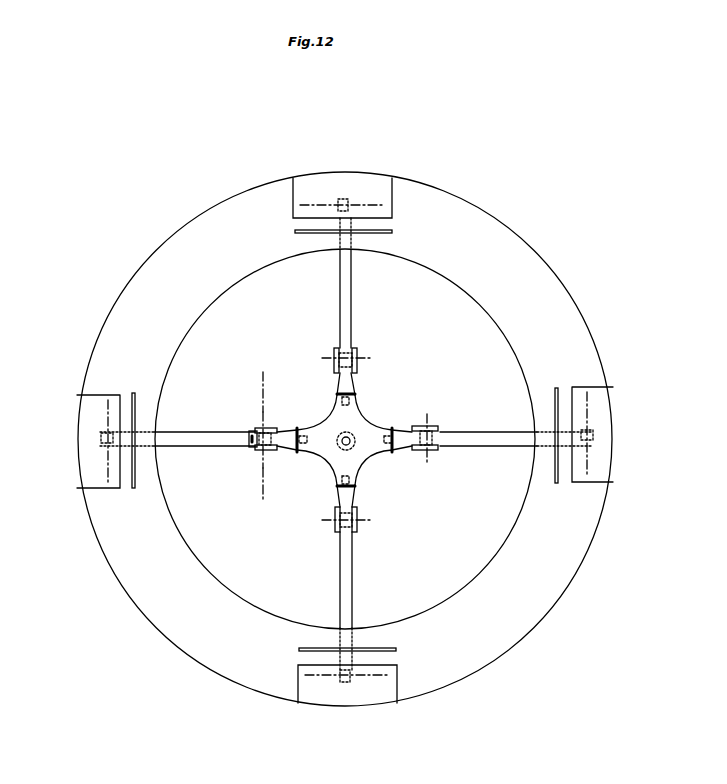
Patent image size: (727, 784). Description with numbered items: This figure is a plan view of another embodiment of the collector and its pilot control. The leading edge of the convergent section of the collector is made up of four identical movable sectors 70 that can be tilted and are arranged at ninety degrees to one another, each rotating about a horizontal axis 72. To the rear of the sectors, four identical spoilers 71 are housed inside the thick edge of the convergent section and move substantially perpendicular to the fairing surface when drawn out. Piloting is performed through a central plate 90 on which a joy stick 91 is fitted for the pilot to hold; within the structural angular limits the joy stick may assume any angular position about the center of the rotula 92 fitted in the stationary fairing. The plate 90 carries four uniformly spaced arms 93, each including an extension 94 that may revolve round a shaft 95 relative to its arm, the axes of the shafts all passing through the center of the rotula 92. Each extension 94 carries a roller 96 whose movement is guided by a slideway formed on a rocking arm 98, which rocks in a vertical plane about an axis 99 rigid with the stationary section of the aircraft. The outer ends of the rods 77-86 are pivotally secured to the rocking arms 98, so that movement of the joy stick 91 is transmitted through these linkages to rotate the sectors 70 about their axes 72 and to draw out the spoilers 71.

The movable sector 70 is at (325, 182).
The spoiler 71 is at (376, 233).
The horizontal axis 72 is at (288, 208).
The rods 77-86 is at (188, 440).
The plate 90 is at (370, 418).
The joy stick 91 is at (352, 446).
The rotula 92 is at (342, 446).
The arm 93 is at (352, 407).
The extension 94 is at (350, 383).
The shaft 95 is at (343, 396).
The roller 96 is at (258, 450).
The rocking arm 98 is at (259, 428).
The axis 99 is at (263, 388).